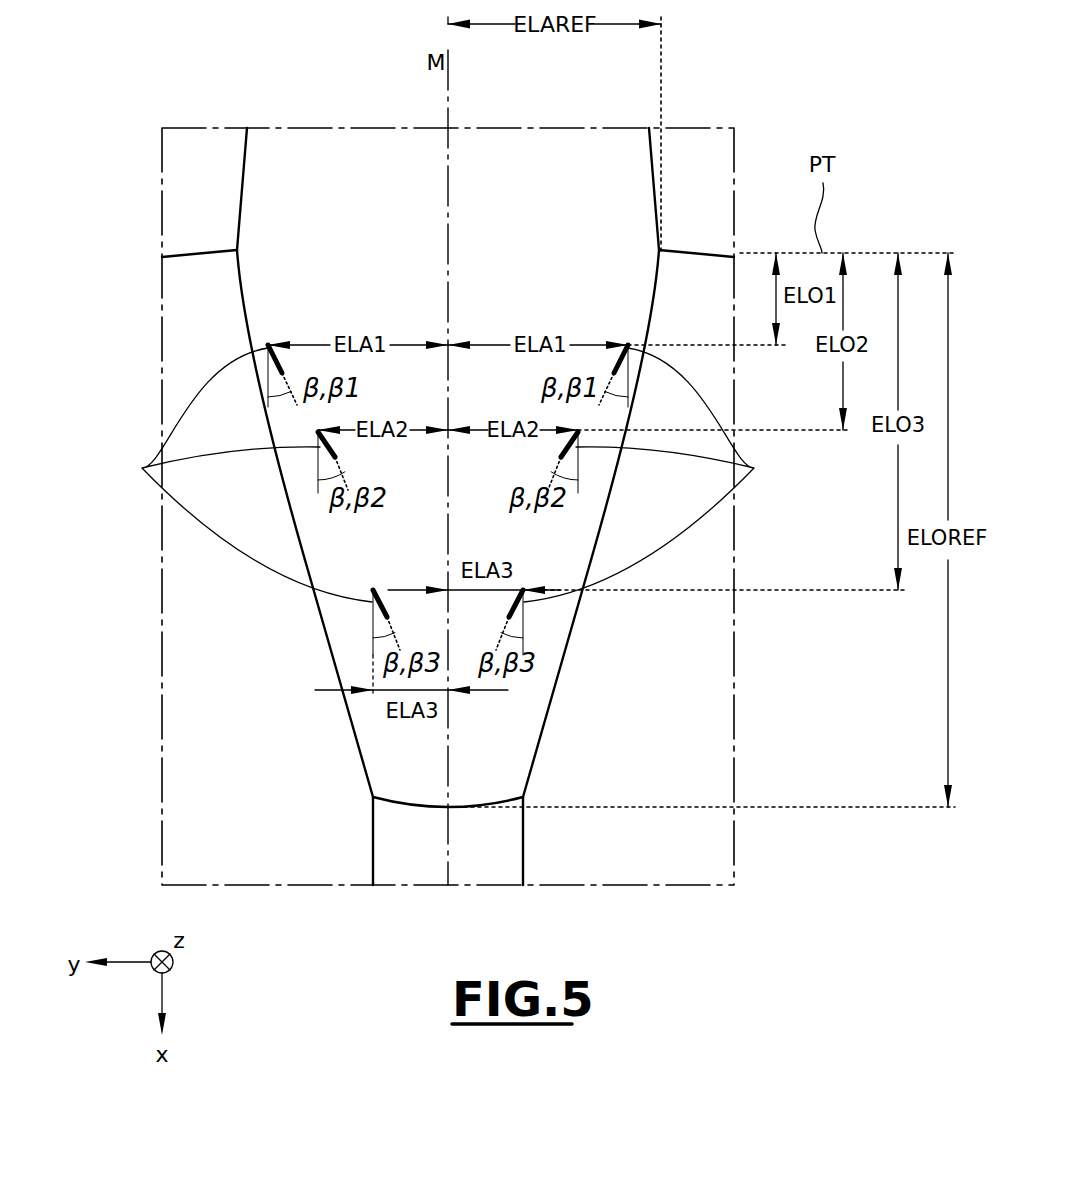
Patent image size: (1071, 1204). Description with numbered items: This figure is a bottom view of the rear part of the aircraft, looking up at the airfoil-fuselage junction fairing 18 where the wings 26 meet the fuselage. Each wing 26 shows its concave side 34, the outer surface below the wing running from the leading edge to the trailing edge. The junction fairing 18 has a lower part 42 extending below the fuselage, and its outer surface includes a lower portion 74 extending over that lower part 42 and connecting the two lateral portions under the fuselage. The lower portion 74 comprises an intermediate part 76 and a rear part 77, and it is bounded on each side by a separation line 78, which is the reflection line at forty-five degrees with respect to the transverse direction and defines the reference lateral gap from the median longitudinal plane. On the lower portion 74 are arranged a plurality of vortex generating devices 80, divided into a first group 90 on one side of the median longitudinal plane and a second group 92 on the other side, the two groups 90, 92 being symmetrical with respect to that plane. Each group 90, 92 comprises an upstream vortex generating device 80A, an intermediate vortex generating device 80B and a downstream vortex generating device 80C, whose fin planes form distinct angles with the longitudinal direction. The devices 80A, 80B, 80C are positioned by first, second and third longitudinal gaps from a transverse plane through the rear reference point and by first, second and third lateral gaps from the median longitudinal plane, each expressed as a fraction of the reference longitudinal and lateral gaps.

The airfoil-fuselage junction fairing 18 is at (445, 477).
The wing 26 is at (202, 150).
The concave side 34 is at (183, 203).
The lower part 42 is at (490, 213).
The lower portion 74 is at (487, 451).
The intermediate part 76 is at (338, 173).
The rear part 77 is at (333, 530).
The separation line 78 is at (565, 677).
The vortex generating device 80 is at (450, 500).
The upstream vortex generating device 80A is at (267, 350).
The intermediate vortex generating device 80B is at (320, 452).
The downstream vortex generating device 80C is at (383, 615).
The first group 90 is at (783, 428).
The second group 92 is at (115, 428).